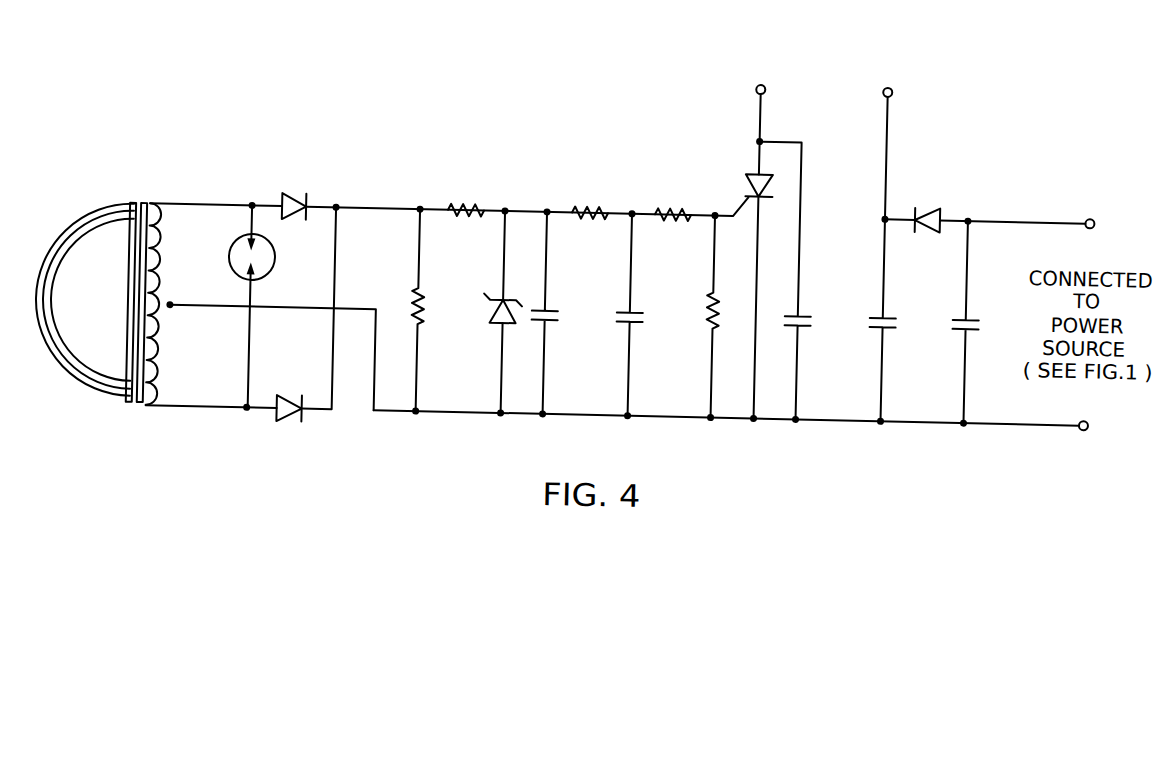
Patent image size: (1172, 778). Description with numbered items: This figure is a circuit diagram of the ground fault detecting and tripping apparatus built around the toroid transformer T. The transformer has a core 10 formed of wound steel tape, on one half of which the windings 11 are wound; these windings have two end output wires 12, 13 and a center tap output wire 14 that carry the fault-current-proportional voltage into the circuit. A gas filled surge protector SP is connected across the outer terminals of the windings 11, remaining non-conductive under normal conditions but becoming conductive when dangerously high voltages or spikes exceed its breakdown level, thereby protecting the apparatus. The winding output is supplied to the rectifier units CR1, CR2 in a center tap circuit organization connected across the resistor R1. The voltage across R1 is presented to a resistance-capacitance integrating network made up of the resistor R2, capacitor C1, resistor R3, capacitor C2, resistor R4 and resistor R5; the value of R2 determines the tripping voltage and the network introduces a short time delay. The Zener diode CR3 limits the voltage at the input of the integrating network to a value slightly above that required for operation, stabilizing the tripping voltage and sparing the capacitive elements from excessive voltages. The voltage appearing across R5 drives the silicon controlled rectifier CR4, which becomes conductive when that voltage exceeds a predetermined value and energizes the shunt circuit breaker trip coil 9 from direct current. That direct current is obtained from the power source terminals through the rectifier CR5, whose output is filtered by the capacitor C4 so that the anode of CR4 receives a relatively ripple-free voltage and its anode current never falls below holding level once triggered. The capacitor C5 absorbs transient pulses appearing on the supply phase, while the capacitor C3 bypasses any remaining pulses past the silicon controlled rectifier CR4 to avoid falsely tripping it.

The shunt circuit breaker trip coil 9 is at (829, 51).
The core 10 is at (55, 314).
The windings 11 is at (167, 251).
The output wire 12 is at (195, 201).
The output wire 13 is at (197, 404).
The center tap output wire 14 is at (197, 302).
The toroid transformer T is at (97, 201).
The gas filled surge protector SP is at (273, 247).
The rectifier unit CR1 is at (295, 187).
The rectifier unit CR2 is at (296, 414).
The Zener diode CR3 is at (493, 305).
The silicon controlled rectifier CR4 is at (747, 159).
The rectifier CR5 is at (928, 190).
The resistor R1 is at (425, 291).
The resistor R2 is at (470, 186).
The resistor R3 is at (586, 195).
The resistor R4 is at (668, 196).
The resistor R5 is at (718, 300).
The capacitor C1 is at (557, 306).
The capacitor C2 is at (642, 306).
The capacitor C3 is at (810, 307).
The capacitor C4 is at (896, 308).
The capacitor C5 is at (980, 307).